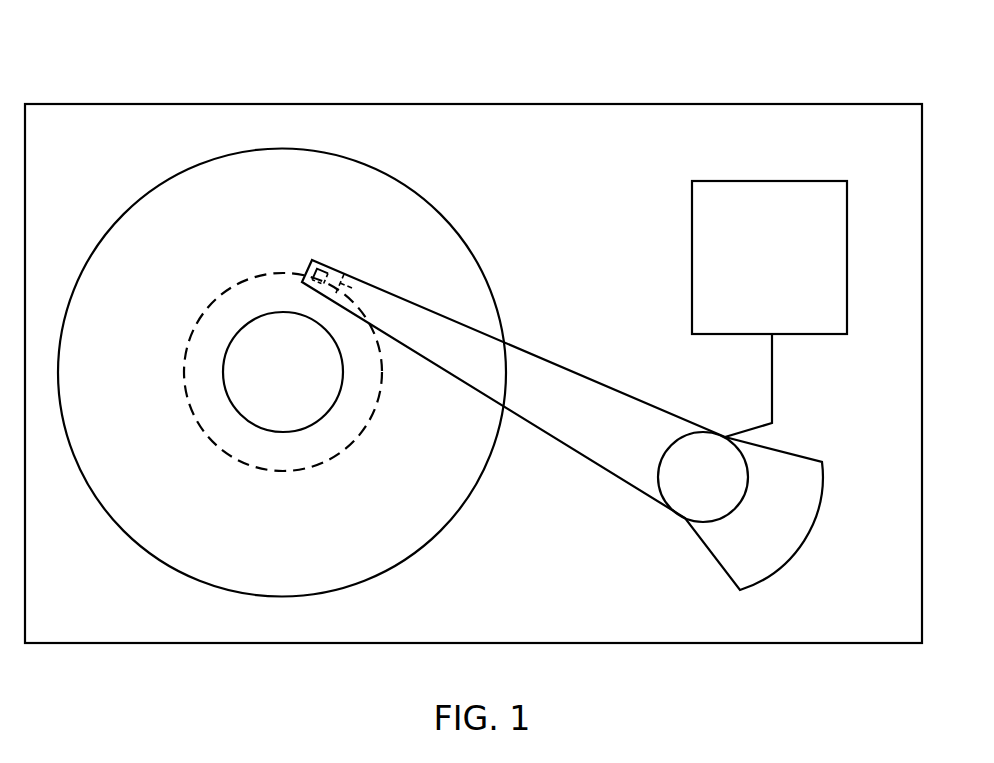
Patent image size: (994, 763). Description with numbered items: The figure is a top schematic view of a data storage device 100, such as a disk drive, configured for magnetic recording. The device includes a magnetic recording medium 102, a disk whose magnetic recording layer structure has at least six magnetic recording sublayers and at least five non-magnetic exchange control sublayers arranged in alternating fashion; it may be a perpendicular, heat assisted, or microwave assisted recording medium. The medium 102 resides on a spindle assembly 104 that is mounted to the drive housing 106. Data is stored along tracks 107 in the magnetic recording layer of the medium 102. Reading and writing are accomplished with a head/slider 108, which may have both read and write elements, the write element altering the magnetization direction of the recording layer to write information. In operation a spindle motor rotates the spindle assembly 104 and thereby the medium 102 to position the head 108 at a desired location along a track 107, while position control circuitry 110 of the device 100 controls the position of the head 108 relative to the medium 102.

The data storage device 100 is at (224, 62).
The magnetic recording medium 102 is at (420, 194).
The spindle assembly 104 is at (264, 379).
The drive housing 106 is at (622, 104).
The tracks 107 is at (257, 275).
The head/slider 108 is at (342, 278).
The position control circuitry 110 is at (746, 275).